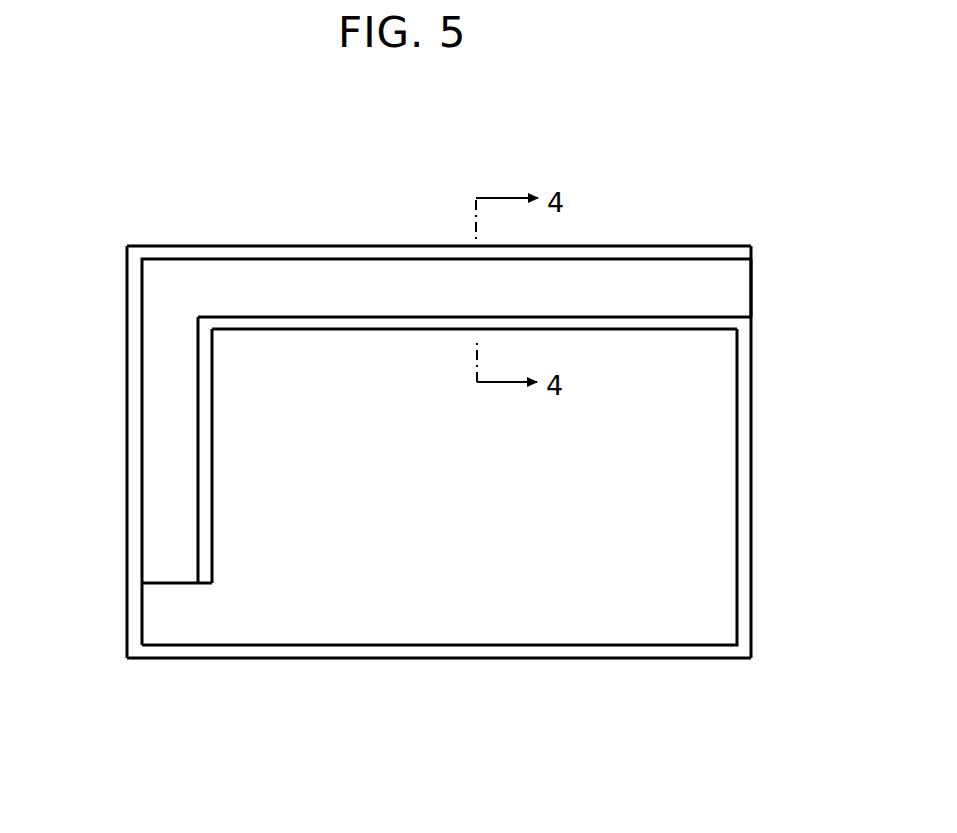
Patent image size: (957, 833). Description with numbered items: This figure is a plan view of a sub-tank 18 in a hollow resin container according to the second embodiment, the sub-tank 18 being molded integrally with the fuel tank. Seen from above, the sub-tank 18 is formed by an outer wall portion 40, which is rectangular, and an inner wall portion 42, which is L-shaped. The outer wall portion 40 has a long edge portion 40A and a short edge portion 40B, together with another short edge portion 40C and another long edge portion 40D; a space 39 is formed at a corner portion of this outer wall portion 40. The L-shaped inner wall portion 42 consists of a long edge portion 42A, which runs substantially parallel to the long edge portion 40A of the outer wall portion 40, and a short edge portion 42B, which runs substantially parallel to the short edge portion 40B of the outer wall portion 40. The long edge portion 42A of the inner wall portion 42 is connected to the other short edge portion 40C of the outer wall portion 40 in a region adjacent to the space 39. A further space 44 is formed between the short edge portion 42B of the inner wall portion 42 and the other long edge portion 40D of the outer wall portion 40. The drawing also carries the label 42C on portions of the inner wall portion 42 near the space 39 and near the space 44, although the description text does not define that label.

The sub-tank 18 is at (633, 218).
The space 39 is at (735, 295).
The outer wall portion 40 is at (388, 240).
The long edge portion of the outer wall portion 40A is at (281, 247).
The short edge portion of the outer wall portion 40B is at (126, 403).
The another short edge portion of the outer wall portion 40C is at (752, 407).
The another long edge portion of the outer wall portion 40D is at (430, 659).
The inner wall portion 42 is at (398, 334).
The long edge portion of the inner wall portion 42A is at (636, 331).
The short edge portion of the inner wall portion 42B is at (218, 421).
The end portions of channel 42C is at (690, 272).
The space 44 is at (194, 608).